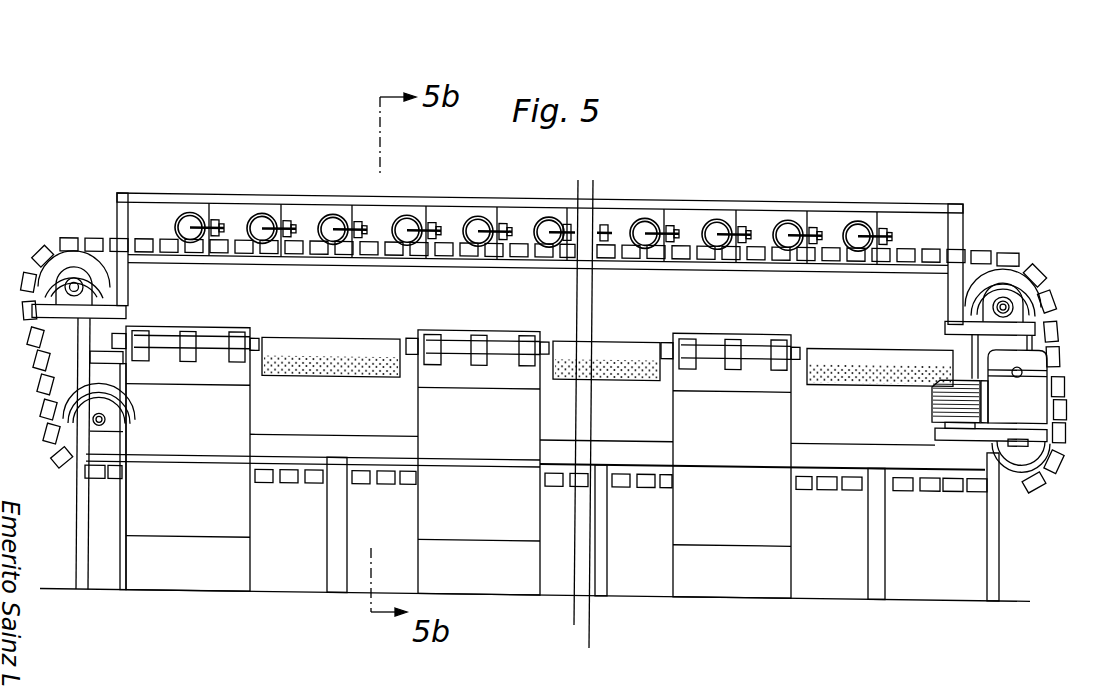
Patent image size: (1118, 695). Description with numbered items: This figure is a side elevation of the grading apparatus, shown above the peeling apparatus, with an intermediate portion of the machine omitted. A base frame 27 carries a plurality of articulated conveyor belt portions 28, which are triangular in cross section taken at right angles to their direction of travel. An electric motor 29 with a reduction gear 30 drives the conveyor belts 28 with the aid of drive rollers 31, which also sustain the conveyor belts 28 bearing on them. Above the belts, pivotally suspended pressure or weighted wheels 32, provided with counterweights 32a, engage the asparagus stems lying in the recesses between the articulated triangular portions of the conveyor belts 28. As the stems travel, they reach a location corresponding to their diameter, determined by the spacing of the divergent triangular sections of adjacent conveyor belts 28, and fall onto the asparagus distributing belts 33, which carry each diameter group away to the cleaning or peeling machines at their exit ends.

The base frame 27 is at (765, 208).
The articulated conveyor belt portions 28 is at (696, 240).
The electric motor 29 is at (948, 407).
The reduction gear 30 is at (1035, 383).
The drive rollers 31 is at (78, 255).
The pressure wheels 32 is at (480, 218).
The counterweights 32a is at (290, 222).
The asparagus distributing belts 33 is at (297, 372).